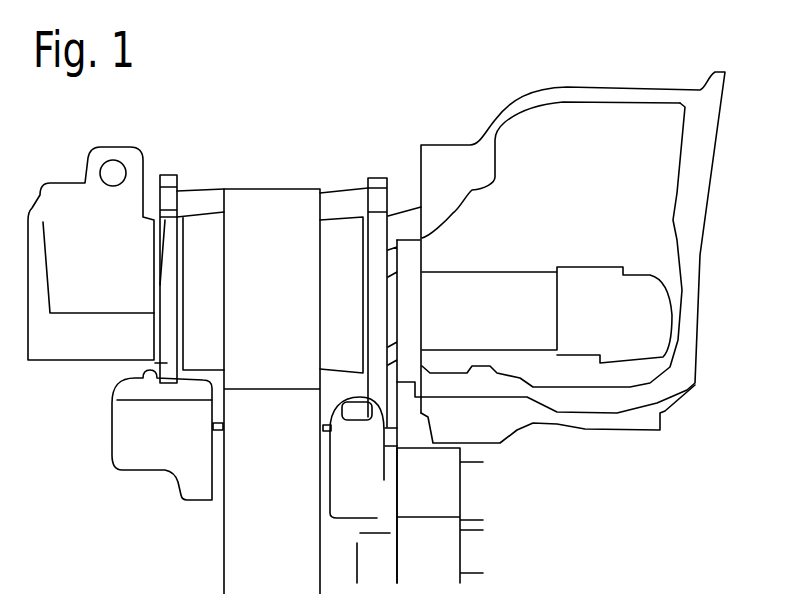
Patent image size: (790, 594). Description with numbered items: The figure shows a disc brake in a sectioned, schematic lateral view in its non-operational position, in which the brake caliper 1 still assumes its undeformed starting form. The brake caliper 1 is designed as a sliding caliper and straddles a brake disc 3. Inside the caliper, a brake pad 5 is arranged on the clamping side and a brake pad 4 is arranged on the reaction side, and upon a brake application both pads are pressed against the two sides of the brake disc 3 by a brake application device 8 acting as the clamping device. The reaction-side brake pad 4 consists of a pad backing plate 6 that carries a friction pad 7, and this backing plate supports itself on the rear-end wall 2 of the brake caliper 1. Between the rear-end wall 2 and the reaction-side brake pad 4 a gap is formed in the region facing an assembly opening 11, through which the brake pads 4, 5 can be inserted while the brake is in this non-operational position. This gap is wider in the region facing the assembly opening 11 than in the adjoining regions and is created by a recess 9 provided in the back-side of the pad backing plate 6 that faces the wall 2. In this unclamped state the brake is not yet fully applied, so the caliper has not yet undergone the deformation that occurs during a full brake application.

The brake caliper 1 is at (440, 172).
The rear-end wall 2 is at (142, 237).
The brake disc 3 is at (269, 215).
The brake pad 4 is at (186, 173).
The brake pad 5 is at (342, 180).
The pad backing plate 6 is at (167, 363).
The friction pad 7 is at (330, 330).
The brake application device 8 is at (519, 265).
The recess 9 is at (164, 219).
The assembly opening 11 is at (403, 195).